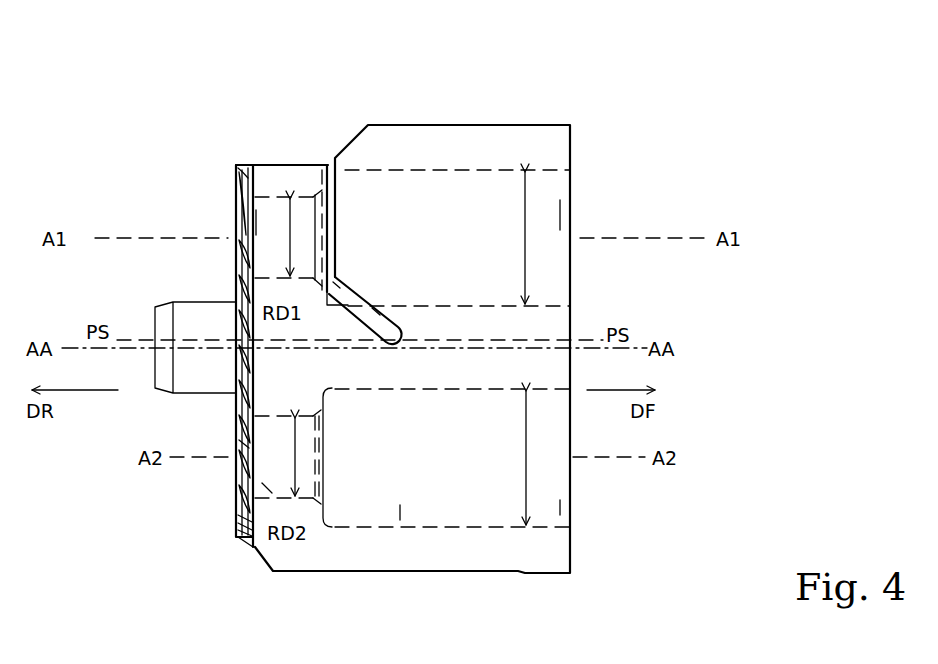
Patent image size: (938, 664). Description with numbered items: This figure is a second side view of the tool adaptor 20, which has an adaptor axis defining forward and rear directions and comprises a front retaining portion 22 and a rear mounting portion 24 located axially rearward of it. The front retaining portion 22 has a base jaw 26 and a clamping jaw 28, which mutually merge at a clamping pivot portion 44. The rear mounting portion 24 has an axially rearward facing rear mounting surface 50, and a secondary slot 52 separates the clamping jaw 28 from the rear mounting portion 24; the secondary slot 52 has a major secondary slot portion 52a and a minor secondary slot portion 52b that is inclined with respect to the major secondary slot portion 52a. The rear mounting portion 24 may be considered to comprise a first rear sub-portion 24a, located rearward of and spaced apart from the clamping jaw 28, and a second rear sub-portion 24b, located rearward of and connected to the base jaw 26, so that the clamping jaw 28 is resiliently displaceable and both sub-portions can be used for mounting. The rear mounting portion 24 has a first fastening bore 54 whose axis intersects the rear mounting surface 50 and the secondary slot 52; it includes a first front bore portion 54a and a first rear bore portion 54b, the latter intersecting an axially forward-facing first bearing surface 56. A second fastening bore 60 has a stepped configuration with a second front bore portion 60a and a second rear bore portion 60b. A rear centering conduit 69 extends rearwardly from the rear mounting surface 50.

The tool adaptor 20 is at (595, 98).
The front retaining portion 22 is at (500, 148).
The rear mounting portion 24 is at (272, 180).
The first rear sub-portion 24a is at (243, 170).
The second rear sub-portion 24b is at (263, 520).
The base jaw 26 is at (469, 382).
The clamping jaw 28 is at (469, 277).
The clamping pivot portion 44 is at (518, 333).
The rear mounting surface 50 is at (235, 448).
The secondary slot 52 is at (327, 157).
The major secondary slot portion 52a is at (328, 237).
The minor secondary slot portion 52b is at (365, 313).
The first fastening bore 54 is at (447, 195).
The first front bore portion 54a is at (548, 215).
The first rear bore portion 54b is at (262, 223).
The first bearing surface 56 is at (327, 195).
The second fastening bore 60 is at (398, 500).
The second front bore portion 60a is at (555, 507).
The second rear bore portion 60b is at (270, 482).
The rear centering conduit 69 is at (205, 313).